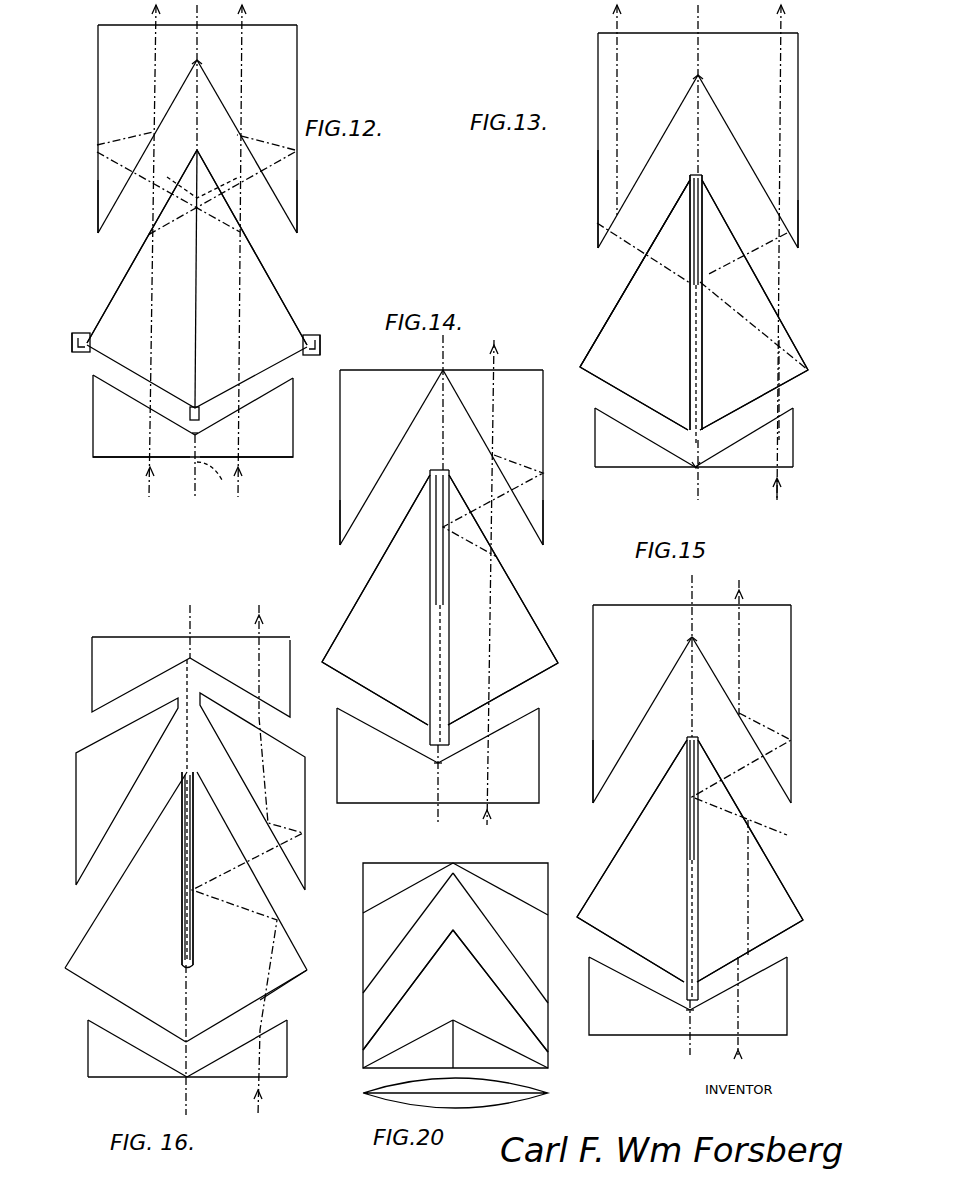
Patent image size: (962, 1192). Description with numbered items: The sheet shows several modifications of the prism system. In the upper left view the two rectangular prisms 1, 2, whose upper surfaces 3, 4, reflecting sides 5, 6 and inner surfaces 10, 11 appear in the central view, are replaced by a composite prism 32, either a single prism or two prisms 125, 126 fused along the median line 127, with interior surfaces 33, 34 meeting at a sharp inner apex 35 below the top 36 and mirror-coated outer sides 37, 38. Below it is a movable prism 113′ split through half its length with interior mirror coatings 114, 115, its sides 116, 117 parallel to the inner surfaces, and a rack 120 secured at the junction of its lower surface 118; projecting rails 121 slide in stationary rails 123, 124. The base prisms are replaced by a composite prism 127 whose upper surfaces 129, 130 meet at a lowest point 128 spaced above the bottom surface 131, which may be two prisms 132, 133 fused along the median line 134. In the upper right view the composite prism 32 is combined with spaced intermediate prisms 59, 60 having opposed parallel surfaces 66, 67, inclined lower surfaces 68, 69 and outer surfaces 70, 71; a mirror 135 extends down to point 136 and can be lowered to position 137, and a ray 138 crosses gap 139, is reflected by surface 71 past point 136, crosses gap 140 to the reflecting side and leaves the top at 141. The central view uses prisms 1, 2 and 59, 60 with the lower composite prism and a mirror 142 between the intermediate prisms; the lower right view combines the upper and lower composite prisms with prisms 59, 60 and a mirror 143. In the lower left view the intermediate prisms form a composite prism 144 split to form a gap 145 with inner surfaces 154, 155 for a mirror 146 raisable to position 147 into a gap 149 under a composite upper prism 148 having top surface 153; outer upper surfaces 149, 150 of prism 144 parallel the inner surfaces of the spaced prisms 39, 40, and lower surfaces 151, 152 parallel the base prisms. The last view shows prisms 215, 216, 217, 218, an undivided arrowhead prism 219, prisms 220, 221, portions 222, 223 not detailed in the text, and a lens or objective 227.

In FIG. 14, the rectangular prism 1 is at (340, 409).
In FIG. 14, the rectangular prism 2 is at (538, 390).
In FIG. 14, the upper surface 3 is at (360, 370).
In FIG. 14, the upper surface 4 is at (527, 370).
In FIG. 14, the reversed side 5 is at (340, 521).
In FIG. 14, the reversed side 6 is at (543, 515).
In FIG. 14, the inner surface 10 is at (352, 522).
In FIG. 14, the inner surface 11 is at (528, 529).
In FIG. 13, the composite prism 32 is at (589, 76).
In FIG. 15, the composite prism 32 is at (602, 592).
In FIG. 12, the interior surface 33 is at (160, 113).
In FIG. 13, the interior surface 33 is at (645, 160).
In FIG. 15, the interior surface 33 is at (602, 781).
In FIG. 12, the interior surface 34 is at (238, 136).
In FIG. 13, the interior surface 34 is at (748, 178).
In FIG. 15, the interior surface 34 is at (778, 784).
In FIG. 12, the inner apex 35 is at (209, 64).
In FIG. 13, the inner apex 35 is at (710, 79).
In FIG. 15, the inner apex 35 is at (704, 639).
In FIG. 12, the upper surface 36 is at (130, 25).
In FIG. 13, the upper surface 36 is at (654, 33).
In FIG. 15, the upper surface 36 is at (772, 605).
In FIG. 12, the side 37 is at (98, 192).
In FIG. 13, the side 37 is at (598, 160).
In FIG. 15, the side 37 is at (593, 769).
In FIG. 12, the side 38 is at (297, 206).
In FIG. 13, the side 38 is at (798, 178).
In FIG. 15, the side 38 is at (791, 753).
In FIG. 16, the prism 39 is at (78, 819).
In FIG. 16, the prism 40 is at (300, 874).
In FIG. 13, the intermediate prism 59 is at (635, 305).
In FIG. 14, the intermediate prism 59 is at (376, 600).
In FIG. 15, the intermediate prism 59 is at (632, 861).
In FIG. 13, the intermediate prism 60 is at (754, 305).
In FIG. 14, the intermediate prism 60 is at (503, 600).
In FIG. 15, the intermediate prism 60 is at (750, 861).
In FIG. 13, the opposed parallel surface 66 is at (688, 386).
In FIG. 14, the opposed parallel surface 66 is at (430, 657).
In FIG. 15, the opposed parallel surface 66 is at (686, 916).
In FIG. 13, the opposed parallel surface 67 is at (708, 393).
In FIG. 14, the opposed parallel surface 67 is at (449, 657).
In FIG. 15, the opposed parallel surface 67 is at (698, 929).
In FIG. 13, the lower surface 68 is at (620, 396).
In FIG. 14, the lower surface 68 is at (355, 686).
In FIG. 15, the lower surface 68 is at (578, 931).
In FIG. 13, the lower surface 69 is at (783, 395).
In FIG. 14, the lower surface 69 is at (551, 681).
In FIG. 15, the lower surface 69 is at (795, 931).
In FIG. 13, the outer surface 70 is at (622, 302).
In FIG. 14, the outer surface 70 is at (352, 607).
In FIG. 15, the outer surface 70 is at (665, 763).
In FIG. 13, the outer surface 71 is at (740, 245).
In FIG. 14, the outer surface 71 is at (519, 589).
In FIG. 15, the outer surface 71 is at (720, 763).
In FIG. 12, the movable prism 113′ is at (288, 285).
In FIG. 12, the interior mirror coating 114 is at (192, 179).
In FIG. 12, the interior mirror coating 115 is at (221, 193).
In FIG. 12, the side 116 is at (150, 236).
In FIG. 12, the side 117 is at (247, 252).
In FIG. 12, the lower surface 118 is at (197, 376).
In FIG. 12, the rack 120 is at (189, 412).
In FIG. 12, the projecting rail 121 is at (85, 334).
In FIG. 12, the stationary rail 123 is at (80, 353).
In FIG. 12, the stationary rail 124 is at (316, 355).
In FIG. 12, the prism 125 is at (98, 62).
In FIG. 13, the prism 125 is at (598, 195).
In FIG. 12, the prism 126 is at (297, 60).
In FIG. 13, the prism 126 is at (798, 208).
In FIG. 12, the composite prism 127 is at (169, 473).
In FIG. 13, the composite prism 127 is at (755, 251).
In FIG. 14, the composite prism 127 is at (520, 803).
In FIG. 12, the lowest point 128 is at (202, 427).
In FIG. 14, the lowest point 128 is at (442, 773).
In FIG. 15, the lowest point 128 is at (695, 1017).
In FIG. 12, the upper surface 129 is at (128, 398).
In FIG. 14, the upper surface 129 is at (385, 739).
In FIG. 15, the upper surface 129 is at (620, 976).
In FIG. 12, the upper surface 130 is at (258, 402).
In FIG. 14, the upper surface 130 is at (498, 723).
In FIG. 15, the upper surface 130 is at (755, 976).
In FIG. 12, the bottom surface 131 is at (130, 458).
In FIG. 14, the bottom surface 131 is at (378, 803).
In FIG. 12, the prism 132 is at (93, 440).
In FIG. 12, the prism 133 is at (275, 460).
In FIG. 12, the median line 134 is at (216, 479).
In FIG. 13, the mirror 135 is at (702, 176).
In FIG. 13, the point 136 is at (704, 323).
In FIG. 13, the lowered position 137 is at (698, 448).
In FIG. 13, the light ray 138 is at (780, 498).
In FIG. 13, the gap 139 is at (800, 401).
In FIG. 13, the gap 140 is at (635, 273).
In FIG. 13, the exit point 141 is at (596, 109).
In FIG. 14, the mirror 142 is at (437, 473).
In FIG. 15, the mirror 143 is at (699, 736).
In FIG. 16, the composite prism 144 is at (303, 969).
In FIG. 16, the gap 145 is at (200, 773).
In FIG. 16, the mirror 146 is at (183, 775).
In FIG. 16, the raised position 147 is at (186, 691).
In FIG. 16, the composite prism 148 is at (92, 651).
In FIG. 16, the gap 149 is at (200, 739).
In FIG. 16, the outer upper surface 150 is at (288, 941).
In FIG. 16, the lower surface 151 is at (90, 993).
In FIG. 16, the lower surface 152 is at (295, 984).
In FIG. 16, the top surface 153 is at (118, 637).
In FIG. 16, the inner surface 154 is at (180, 938).
In FIG. 16, the inner surface 155 is at (194, 922).
In FIG. 20, the prism 215 is at (408, 888).
In FIG. 20, the prism 216 is at (500, 889).
In FIG. 20, the prism 217 is at (408, 933).
In FIG. 20, the prism 218 is at (500, 938).
In FIG. 20, the arrowhead prism 219 is at (455, 991).
In FIG. 20, the prism 220 is at (408, 1044).
In FIG. 20, the prism 221 is at (500, 1044).
In FIG. 20, the panel 222 is at (408, 990).
In FIG. 20, the panel 223 is at (500, 991).
In FIG. 20, the lens strip 227 is at (554, 1097).